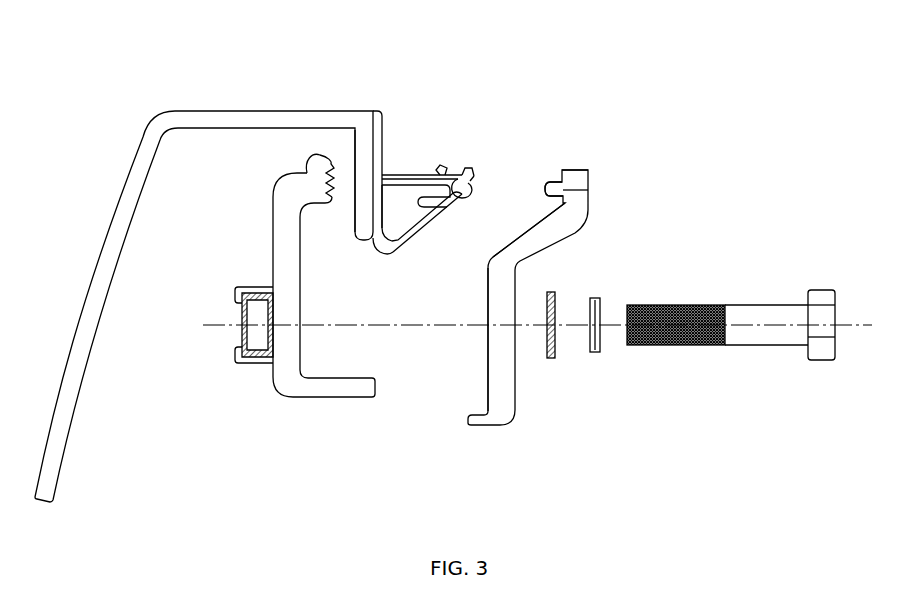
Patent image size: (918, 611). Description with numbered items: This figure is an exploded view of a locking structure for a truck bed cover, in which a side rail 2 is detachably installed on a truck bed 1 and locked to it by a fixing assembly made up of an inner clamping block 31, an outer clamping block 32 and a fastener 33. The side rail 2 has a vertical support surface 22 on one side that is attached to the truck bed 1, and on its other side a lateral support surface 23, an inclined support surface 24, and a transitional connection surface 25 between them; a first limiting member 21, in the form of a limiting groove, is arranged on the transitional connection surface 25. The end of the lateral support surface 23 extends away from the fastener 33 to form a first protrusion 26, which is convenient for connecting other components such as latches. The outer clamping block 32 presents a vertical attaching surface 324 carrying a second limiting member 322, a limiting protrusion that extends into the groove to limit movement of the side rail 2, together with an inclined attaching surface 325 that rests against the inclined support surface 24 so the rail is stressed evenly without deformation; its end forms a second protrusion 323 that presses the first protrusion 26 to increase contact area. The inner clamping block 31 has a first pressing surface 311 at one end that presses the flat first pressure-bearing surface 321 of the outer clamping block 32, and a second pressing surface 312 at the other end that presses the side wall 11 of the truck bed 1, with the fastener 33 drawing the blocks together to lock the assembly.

The truck bed 1 is at (232, 118).
The side wall 11 is at (338, 140).
The side rail 2 is at (444, 176).
The first limiting member 21 is at (463, 187).
The vertical support surface 22 is at (382, 132).
The lateral support surface 23 is at (408, 176).
The inclined support surface 24 is at (432, 240).
The transitional connection surface 25 is at (473, 174).
The first protrusion 26 is at (468, 169).
The inner clamping block 31 is at (321, 277).
The first pressing surface 311 is at (373, 388).
The second pressing surface 312 is at (307, 170).
The outer clamping block 32 is at (540, 283).
The first pressure-bearing surface 321 is at (487, 390).
The second limiting member 322 is at (588, 192).
The second protrusion 323 is at (588, 172).
The vertical attaching surface 324 is at (556, 181).
The inclined attaching surface 325 is at (522, 235).
The fastener 33 is at (835, 352).